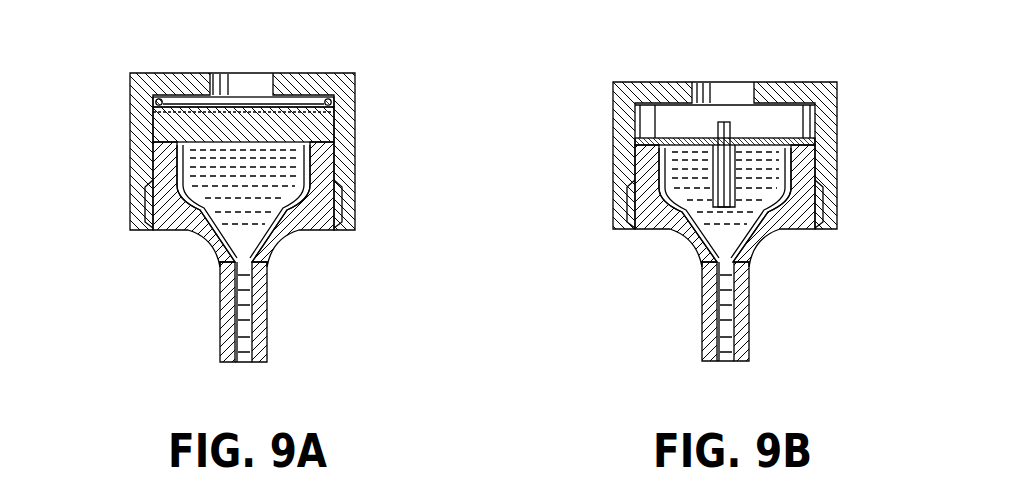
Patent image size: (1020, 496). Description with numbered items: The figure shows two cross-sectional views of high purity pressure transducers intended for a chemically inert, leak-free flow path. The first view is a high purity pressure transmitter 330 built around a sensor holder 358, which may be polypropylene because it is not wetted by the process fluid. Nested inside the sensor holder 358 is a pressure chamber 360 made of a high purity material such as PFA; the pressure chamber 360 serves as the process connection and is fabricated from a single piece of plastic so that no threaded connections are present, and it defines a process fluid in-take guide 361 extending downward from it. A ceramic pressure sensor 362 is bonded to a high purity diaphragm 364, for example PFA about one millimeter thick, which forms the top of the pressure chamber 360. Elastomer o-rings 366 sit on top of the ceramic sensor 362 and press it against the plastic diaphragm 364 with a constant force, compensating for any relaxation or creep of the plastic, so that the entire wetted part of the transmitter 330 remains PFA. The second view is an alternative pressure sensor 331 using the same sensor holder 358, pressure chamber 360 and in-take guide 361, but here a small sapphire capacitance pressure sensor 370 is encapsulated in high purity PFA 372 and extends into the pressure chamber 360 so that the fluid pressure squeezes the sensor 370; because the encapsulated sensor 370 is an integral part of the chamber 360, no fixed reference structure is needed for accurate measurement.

In FIG. 9A, the high purity pressure transmitter 330 is at (258, 196).
In FIG. 9B, the alternative pressure sensor 331 is at (739, 193).
In FIG. 9A, the sensor holder 358 is at (163, 82).
In FIG. 9B, the sensor holder 358 is at (640, 88).
In FIG. 9A, the pressure chamber 360 is at (286, 256).
In FIG. 9B, the pressure chamber 360 is at (766, 256).
In FIG. 9A, the process fluid in-take guide 361 is at (227, 297).
In FIG. 9B, the process fluid in-take guide 361 is at (707, 297).
In FIG. 9A, the ceramic pressure sensor 362 is at (287, 90).
In FIG. 9A, the high purity diaphragm 364 is at (313, 133).
In FIG. 9A, the elastomer o-rings 366 is at (157, 99).
In FIG. 9B, the capacitance pressure sensor 370 is at (735, 162).
In FIG. 9B, the high purity encapsulating material 372 is at (750, 183).